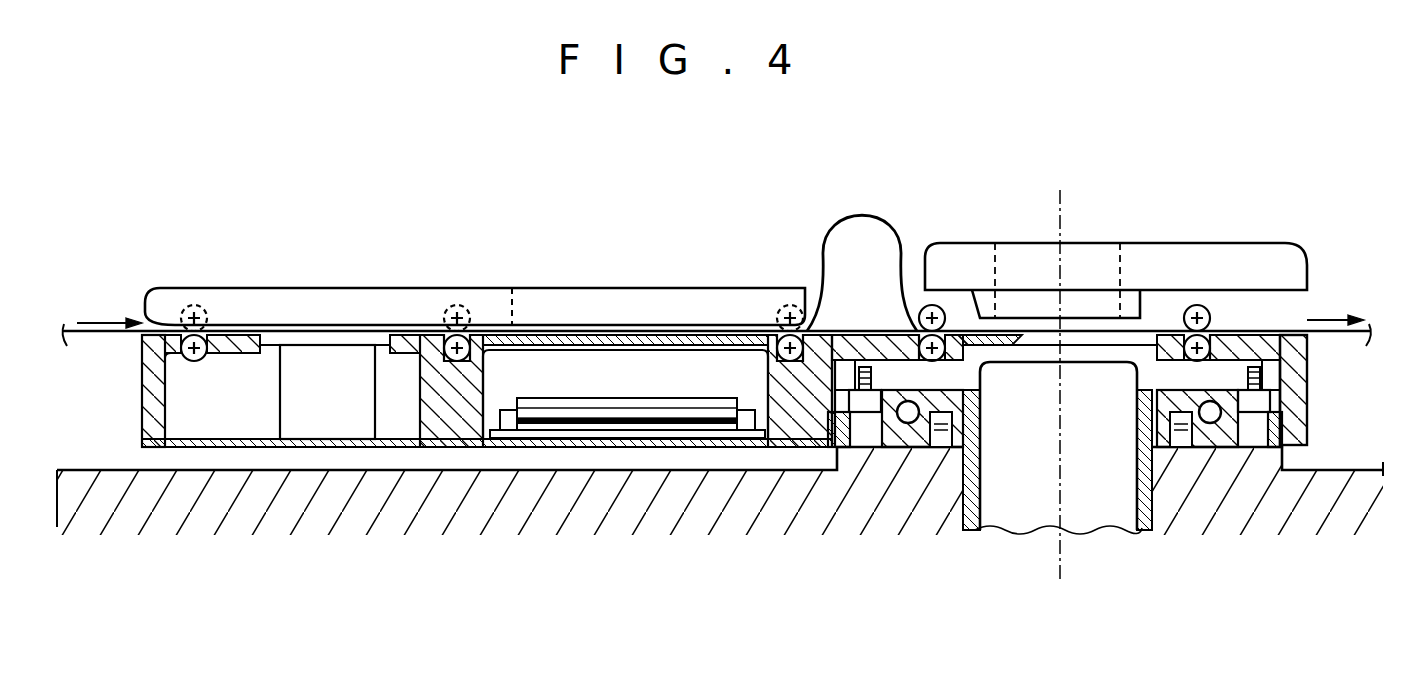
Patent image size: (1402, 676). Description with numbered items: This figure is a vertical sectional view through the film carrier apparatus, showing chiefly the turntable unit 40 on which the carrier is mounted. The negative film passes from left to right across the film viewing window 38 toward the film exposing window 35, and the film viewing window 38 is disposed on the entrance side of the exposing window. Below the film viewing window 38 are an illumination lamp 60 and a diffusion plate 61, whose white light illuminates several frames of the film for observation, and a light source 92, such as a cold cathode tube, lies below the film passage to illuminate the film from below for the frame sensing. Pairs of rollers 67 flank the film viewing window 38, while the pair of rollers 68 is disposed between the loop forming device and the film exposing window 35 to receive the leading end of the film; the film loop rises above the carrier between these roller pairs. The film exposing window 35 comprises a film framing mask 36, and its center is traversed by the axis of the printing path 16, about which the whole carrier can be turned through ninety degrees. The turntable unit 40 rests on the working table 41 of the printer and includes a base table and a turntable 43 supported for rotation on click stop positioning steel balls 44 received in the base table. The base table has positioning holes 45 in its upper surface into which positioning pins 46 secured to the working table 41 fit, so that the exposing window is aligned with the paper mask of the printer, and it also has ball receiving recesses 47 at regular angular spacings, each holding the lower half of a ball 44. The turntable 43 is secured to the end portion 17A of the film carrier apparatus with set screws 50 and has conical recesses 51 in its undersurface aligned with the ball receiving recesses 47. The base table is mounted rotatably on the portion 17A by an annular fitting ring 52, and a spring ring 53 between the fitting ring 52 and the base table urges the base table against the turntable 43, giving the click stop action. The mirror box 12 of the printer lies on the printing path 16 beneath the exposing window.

The mirror box 12 is at (1040, 520).
The printing path 16 is at (1062, 200).
The end portion of the film carrier apparatus 17A is at (1309, 378).
The film exposing window 35 is at (1098, 224).
The film framing mask 36 is at (1007, 334).
The film viewing window 38 is at (615, 262).
The turntable unit 40 is at (1309, 421).
The working table 41 is at (1312, 469).
The turntable 43 is at (955, 358).
The click stop positioning steel ball 44 is at (893, 450).
The positioning hole 45 is at (966, 450).
The positioning pin 46 is at (938, 450).
The ball receiving recess 47 is at (912, 450).
The set screw 50 is at (840, 340).
The conical recess 51 is at (866, 345).
The annular fitting ring 52 is at (835, 450).
The spring ring 53 is at (873, 450).
The illumination lamp 60 is at (648, 406).
The diffusion plate 61 is at (582, 343).
The rollers 67 is at (190, 305).
The rollers 68 is at (930, 304).
The light source 92 is at (282, 400).